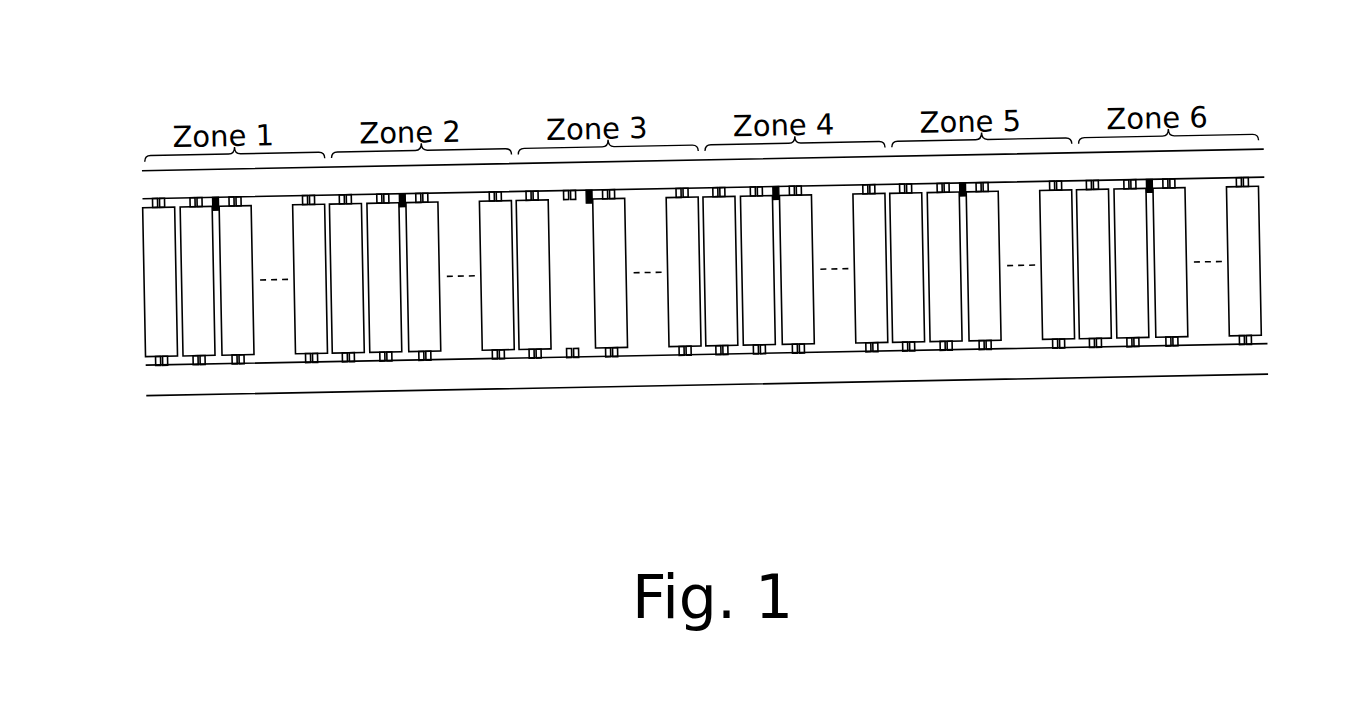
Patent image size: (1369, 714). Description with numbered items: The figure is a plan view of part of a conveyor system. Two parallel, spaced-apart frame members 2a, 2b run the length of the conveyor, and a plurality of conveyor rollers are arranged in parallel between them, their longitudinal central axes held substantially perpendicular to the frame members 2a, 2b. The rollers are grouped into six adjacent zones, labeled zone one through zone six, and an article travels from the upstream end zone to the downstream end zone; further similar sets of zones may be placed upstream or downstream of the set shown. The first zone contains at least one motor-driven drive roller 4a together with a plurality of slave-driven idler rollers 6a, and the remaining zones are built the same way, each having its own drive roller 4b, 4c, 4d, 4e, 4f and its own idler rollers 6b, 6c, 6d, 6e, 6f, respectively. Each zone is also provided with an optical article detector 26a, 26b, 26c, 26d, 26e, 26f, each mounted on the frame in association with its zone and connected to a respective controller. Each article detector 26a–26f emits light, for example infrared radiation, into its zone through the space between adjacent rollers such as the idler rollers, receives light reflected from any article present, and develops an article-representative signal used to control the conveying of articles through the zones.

The frame member 2a is at (1250, 162).
The frame member 2b is at (1057, 358).
The drive roller 4a is at (316, 335).
The drive roller 4b is at (498, 337).
The drive roller 4c is at (678, 330).
The drive roller 4d is at (863, 330).
The drive roller 4e is at (1048, 330).
The drive roller 4f is at (1245, 303).
The idler rollers 6a is at (160, 330).
The idler rollers 6b is at (350, 332).
The idler rollers 6c is at (535, 337).
The idler rollers 6d is at (723, 330).
The idler rollers 6e is at (947, 330).
The idler rollers 6f is at (1092, 330).
The article detector 26a is at (217, 210).
The article detector 26b is at (406, 207).
The article detector 26c is at (592, 202).
The article detector 26d is at (778, 202).
The article detector 26e is at (965, 199).
The article detector 26f is at (1147, 190).